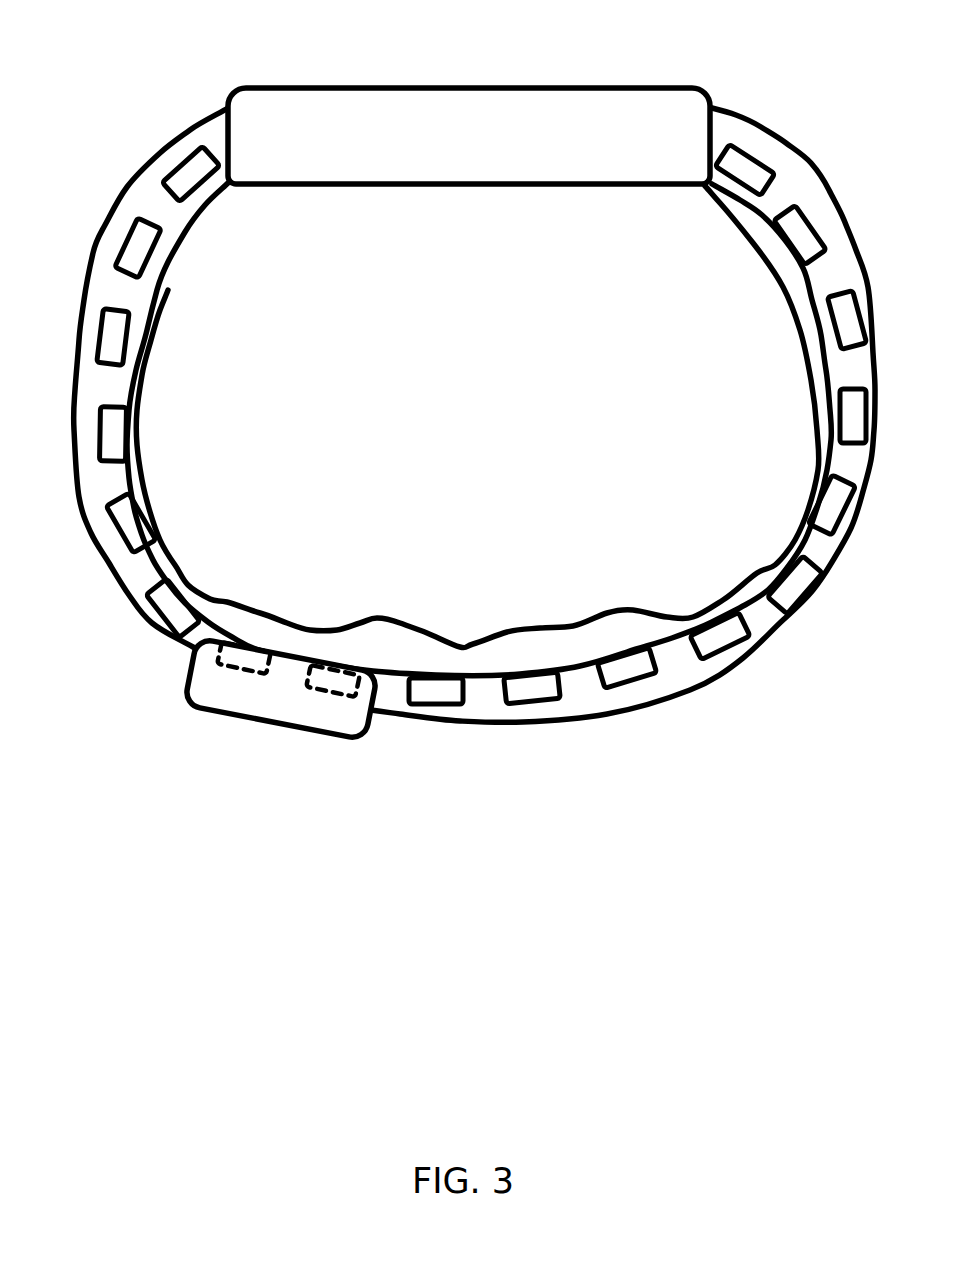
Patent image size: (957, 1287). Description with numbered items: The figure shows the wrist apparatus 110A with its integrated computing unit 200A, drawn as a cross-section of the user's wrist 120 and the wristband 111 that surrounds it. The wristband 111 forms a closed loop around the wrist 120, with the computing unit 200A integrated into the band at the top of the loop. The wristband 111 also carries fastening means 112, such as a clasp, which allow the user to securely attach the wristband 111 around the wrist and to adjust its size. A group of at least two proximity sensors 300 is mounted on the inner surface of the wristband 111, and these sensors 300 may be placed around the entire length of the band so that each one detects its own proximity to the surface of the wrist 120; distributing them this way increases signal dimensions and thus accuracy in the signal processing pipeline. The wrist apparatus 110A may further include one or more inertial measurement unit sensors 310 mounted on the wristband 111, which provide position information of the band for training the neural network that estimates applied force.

The wrist apparatus 110A is at (461, 538).
The wristband 111 is at (133, 180).
The fastening means 112 is at (233, 717).
The wrist 120 is at (373, 611).
The computing unit 200A is at (435, 88).
The proximity sensor 300 is at (482, 462).
The inertial measurement unit sensor 310 is at (568, 692).